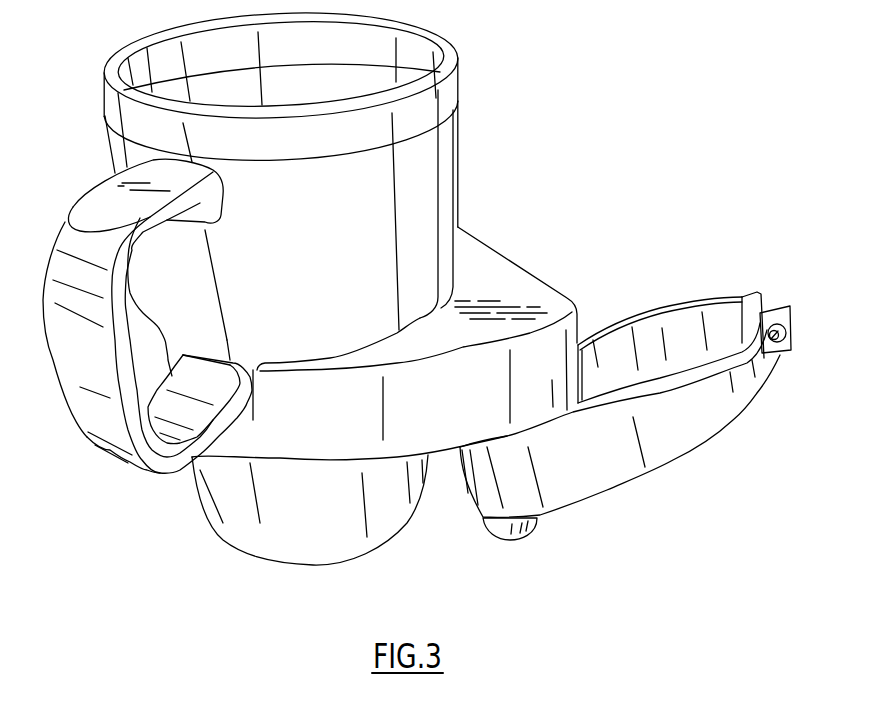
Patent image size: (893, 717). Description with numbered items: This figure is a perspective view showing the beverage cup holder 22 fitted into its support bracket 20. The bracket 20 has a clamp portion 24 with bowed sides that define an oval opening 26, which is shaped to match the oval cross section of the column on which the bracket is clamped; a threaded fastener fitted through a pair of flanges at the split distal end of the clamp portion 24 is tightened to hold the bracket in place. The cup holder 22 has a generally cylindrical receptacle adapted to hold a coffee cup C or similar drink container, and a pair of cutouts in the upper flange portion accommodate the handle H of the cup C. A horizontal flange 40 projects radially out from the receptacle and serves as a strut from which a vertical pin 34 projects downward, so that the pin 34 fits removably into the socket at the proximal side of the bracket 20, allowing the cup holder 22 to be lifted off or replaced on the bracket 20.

The coffee cup C is at (444, 168).
The handle H is at (88, 422).
The bracket 20 is at (625, 402).
The cup holder 22 is at (392, 378).
The clamp portion 24 is at (622, 467).
The oval opening 26 is at (657, 380).
The vertical pin 34 is at (507, 542).
The horizontal flange 40 is at (536, 297).